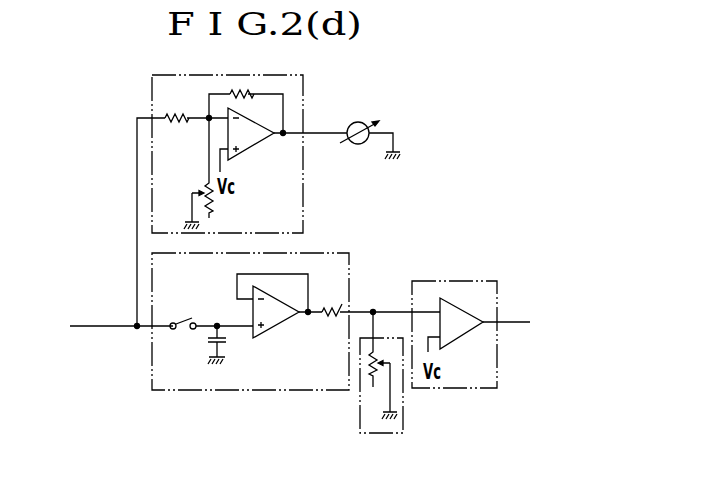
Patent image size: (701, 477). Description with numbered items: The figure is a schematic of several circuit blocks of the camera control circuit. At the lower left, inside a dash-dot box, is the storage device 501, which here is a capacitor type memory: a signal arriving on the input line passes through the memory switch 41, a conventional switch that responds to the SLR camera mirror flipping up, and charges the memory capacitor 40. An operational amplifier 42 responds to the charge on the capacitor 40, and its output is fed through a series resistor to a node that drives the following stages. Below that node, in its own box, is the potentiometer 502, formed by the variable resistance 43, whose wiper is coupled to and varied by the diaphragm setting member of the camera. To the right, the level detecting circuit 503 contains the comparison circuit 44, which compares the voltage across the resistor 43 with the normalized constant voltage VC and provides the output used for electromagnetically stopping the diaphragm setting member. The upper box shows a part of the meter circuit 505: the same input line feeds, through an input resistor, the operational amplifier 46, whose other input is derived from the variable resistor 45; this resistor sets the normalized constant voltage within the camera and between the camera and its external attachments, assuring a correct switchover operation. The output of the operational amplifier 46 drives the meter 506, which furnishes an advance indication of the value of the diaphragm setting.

The memory capacitor 40 is at (227, 340).
The memory switch 41 is at (188, 318).
The operational amplifier 42 is at (278, 318).
The variable resistance 43 is at (365, 363).
The comparison circuit 44 is at (455, 335).
The variable resistor 45 is at (213, 208).
The operational amplifier 46 is at (250, 150).
The storage device 501 is at (183, 379).
The potentiometer 502 is at (363, 415).
The level detecting circuit 503 is at (492, 370).
The meter circuit 505 is at (305, 92).
The meter 506 is at (359, 145).